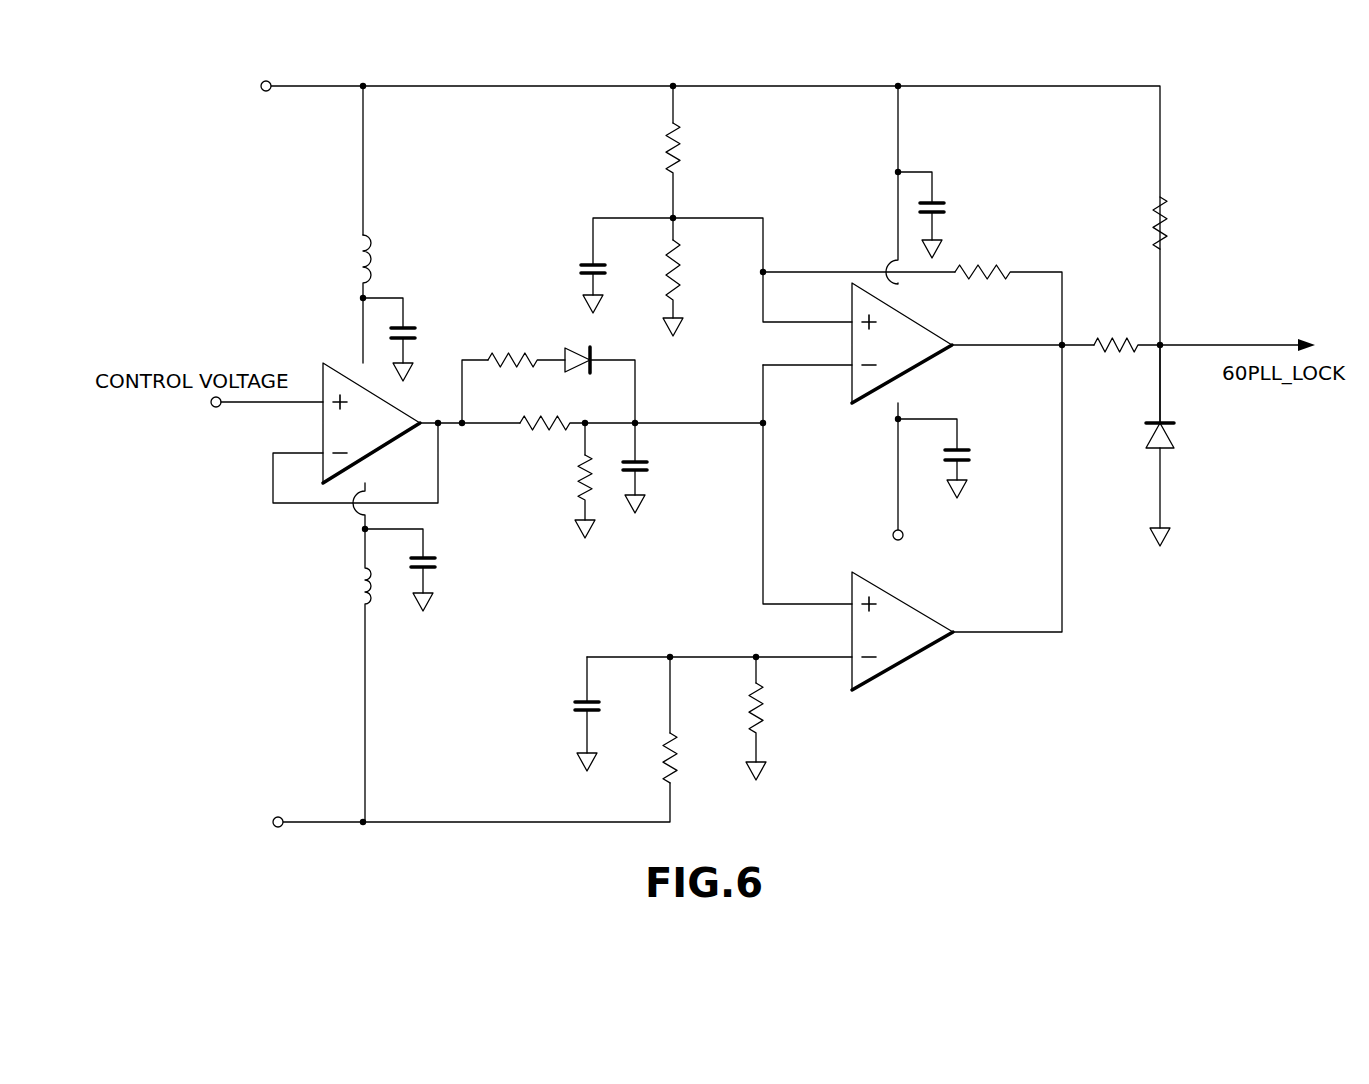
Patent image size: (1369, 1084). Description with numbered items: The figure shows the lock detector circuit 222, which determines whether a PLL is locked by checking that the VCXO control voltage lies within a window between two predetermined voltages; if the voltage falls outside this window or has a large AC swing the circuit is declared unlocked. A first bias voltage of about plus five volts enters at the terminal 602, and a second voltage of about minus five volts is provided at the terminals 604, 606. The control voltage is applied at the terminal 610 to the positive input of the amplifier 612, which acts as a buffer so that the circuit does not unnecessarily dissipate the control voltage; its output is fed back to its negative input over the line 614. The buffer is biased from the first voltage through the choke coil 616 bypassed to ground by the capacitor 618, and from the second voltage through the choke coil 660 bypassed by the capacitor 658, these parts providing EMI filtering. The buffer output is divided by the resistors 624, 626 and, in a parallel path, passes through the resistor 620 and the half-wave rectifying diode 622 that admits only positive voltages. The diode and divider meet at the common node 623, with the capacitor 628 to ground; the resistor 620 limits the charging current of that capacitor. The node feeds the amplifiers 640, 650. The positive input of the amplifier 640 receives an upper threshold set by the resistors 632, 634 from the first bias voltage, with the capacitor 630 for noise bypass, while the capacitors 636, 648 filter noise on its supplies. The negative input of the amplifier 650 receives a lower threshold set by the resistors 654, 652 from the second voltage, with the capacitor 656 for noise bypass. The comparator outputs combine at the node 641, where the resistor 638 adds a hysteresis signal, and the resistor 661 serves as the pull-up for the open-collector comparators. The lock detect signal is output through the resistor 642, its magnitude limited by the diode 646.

The lock detector circuit 222 is at (760, 64).
The terminal 602 is at (263, 79).
The terminal 604 is at (274, 813).
The terminal 606 is at (893, 530).
The terminal 610 is at (214, 410).
The amplifier 612 is at (390, 445).
The line 614 is at (272, 503).
The choke coil 616 is at (353, 283).
The capacitor 618 is at (410, 325).
The resistor 620 is at (496, 365).
The diode 622 is at (615, 330).
The common node 623 is at (638, 418).
The resistor 624 is at (532, 426).
The resistor 626 is at (586, 497).
The capacitor 628 is at (641, 478).
The capacitor 630 is at (591, 262).
The resistor 632 is at (683, 143).
The resistor 634 is at (688, 275).
The capacitor 636 is at (941, 200).
The resistor 638 is at (968, 278).
The amplifier 640 is at (912, 380).
The node 641 is at (1066, 341).
The resistor 642 is at (1096, 351).
The diode 646 is at (1165, 452).
The capacitor 648 is at (963, 468).
The amplifier 650 is at (912, 679).
The resistor 652 is at (771, 733).
The resistor 654 is at (676, 785).
The capacitor 656 is at (583, 713).
The capacitor 658 is at (432, 573).
The choke coil 660 is at (363, 606).
The resistor 661 is at (1163, 252).